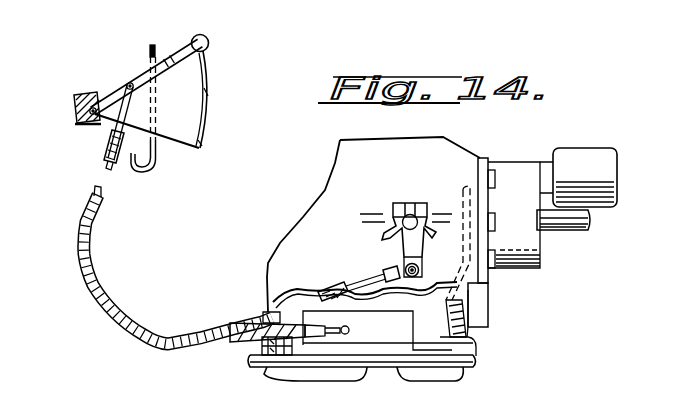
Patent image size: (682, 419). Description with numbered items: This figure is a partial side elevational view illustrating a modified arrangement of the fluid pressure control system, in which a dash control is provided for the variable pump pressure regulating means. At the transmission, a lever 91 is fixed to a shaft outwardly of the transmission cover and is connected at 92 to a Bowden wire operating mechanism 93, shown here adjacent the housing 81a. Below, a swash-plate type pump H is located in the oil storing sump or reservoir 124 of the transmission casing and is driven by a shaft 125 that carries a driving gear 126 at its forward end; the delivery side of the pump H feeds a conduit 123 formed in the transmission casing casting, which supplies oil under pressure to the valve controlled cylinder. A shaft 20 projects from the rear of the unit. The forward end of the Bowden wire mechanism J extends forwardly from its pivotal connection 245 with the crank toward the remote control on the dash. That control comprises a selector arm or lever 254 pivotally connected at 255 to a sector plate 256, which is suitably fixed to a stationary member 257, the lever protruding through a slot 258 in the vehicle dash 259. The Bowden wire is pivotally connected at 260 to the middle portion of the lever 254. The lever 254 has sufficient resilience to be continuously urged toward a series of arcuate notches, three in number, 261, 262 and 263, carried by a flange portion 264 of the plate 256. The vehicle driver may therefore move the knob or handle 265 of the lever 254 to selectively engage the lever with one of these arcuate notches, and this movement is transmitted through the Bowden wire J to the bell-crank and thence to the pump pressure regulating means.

The selector arm or lever 254 is at (173, 44).
The pivotal connection 255 is at (91, 119).
The sector plate 256 is at (181, 132).
The stationary member 257 is at (73, 100).
The slot 258 is at (153, 53).
The vehicle dash 259 is at (140, 170).
The pivotal connection 260 is at (127, 81).
The arcuate notch 261 is at (203, 63).
The arcuate notch 262 is at (205, 93).
The arcuate notch 263 is at (201, 137).
The flange portion 264 is at (187, 22).
The knob or handle 265 is at (207, 46).
The Bowden wire mechanism J is at (95, 276).
The housing 81a is at (442, 149).
The lever 91 is at (397, 237).
The connection 92 is at (420, 263).
The Bowden wire operating mechanism 93 is at (359, 279).
The pivotal connection 245 is at (348, 328).
The shaft 125 is at (283, 368).
The driving gear 126 is at (270, 368).
The swash-plate type pump H is at (340, 344).
The oil storing sump or reservoir 124 is at (416, 379).
The conduit 123 is at (469, 294).
The shaft 20 is at (559, 230).